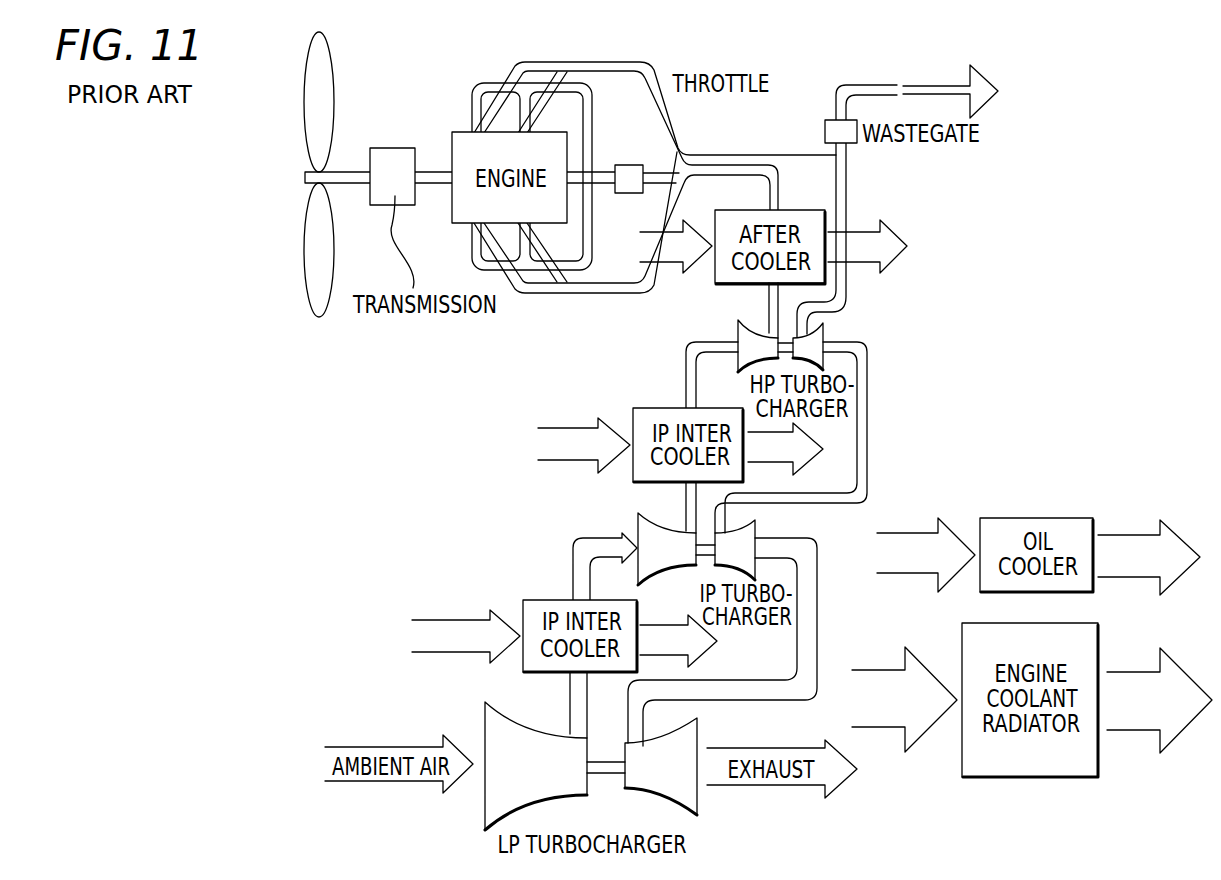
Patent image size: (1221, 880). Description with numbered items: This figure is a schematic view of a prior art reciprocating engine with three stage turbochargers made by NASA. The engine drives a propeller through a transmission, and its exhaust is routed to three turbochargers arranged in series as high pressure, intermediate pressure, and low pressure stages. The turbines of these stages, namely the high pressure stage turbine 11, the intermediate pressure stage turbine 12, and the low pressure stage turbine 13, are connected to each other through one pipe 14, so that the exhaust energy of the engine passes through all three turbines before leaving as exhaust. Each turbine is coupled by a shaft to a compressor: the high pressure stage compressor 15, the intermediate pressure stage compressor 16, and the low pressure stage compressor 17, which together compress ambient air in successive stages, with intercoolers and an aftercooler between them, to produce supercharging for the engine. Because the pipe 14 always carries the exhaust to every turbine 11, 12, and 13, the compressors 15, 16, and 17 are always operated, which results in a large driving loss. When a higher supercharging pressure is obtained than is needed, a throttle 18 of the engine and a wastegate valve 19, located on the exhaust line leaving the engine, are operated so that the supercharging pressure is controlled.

The high pressure stage turbine 11 is at (817, 339).
The intermediate pressure stage turbine 12 is at (752, 533).
The low pressure stage turbine 13 is at (687, 748).
The pipe 14 is at (810, 631).
The high pressure stage compressor 15 is at (743, 333).
The intermediate pressure stage compressor 16 is at (645, 532).
The low pressure stage compressor 17 is at (492, 798).
The throttle 18 is at (636, 166).
The wastegate valve 19 is at (853, 143).